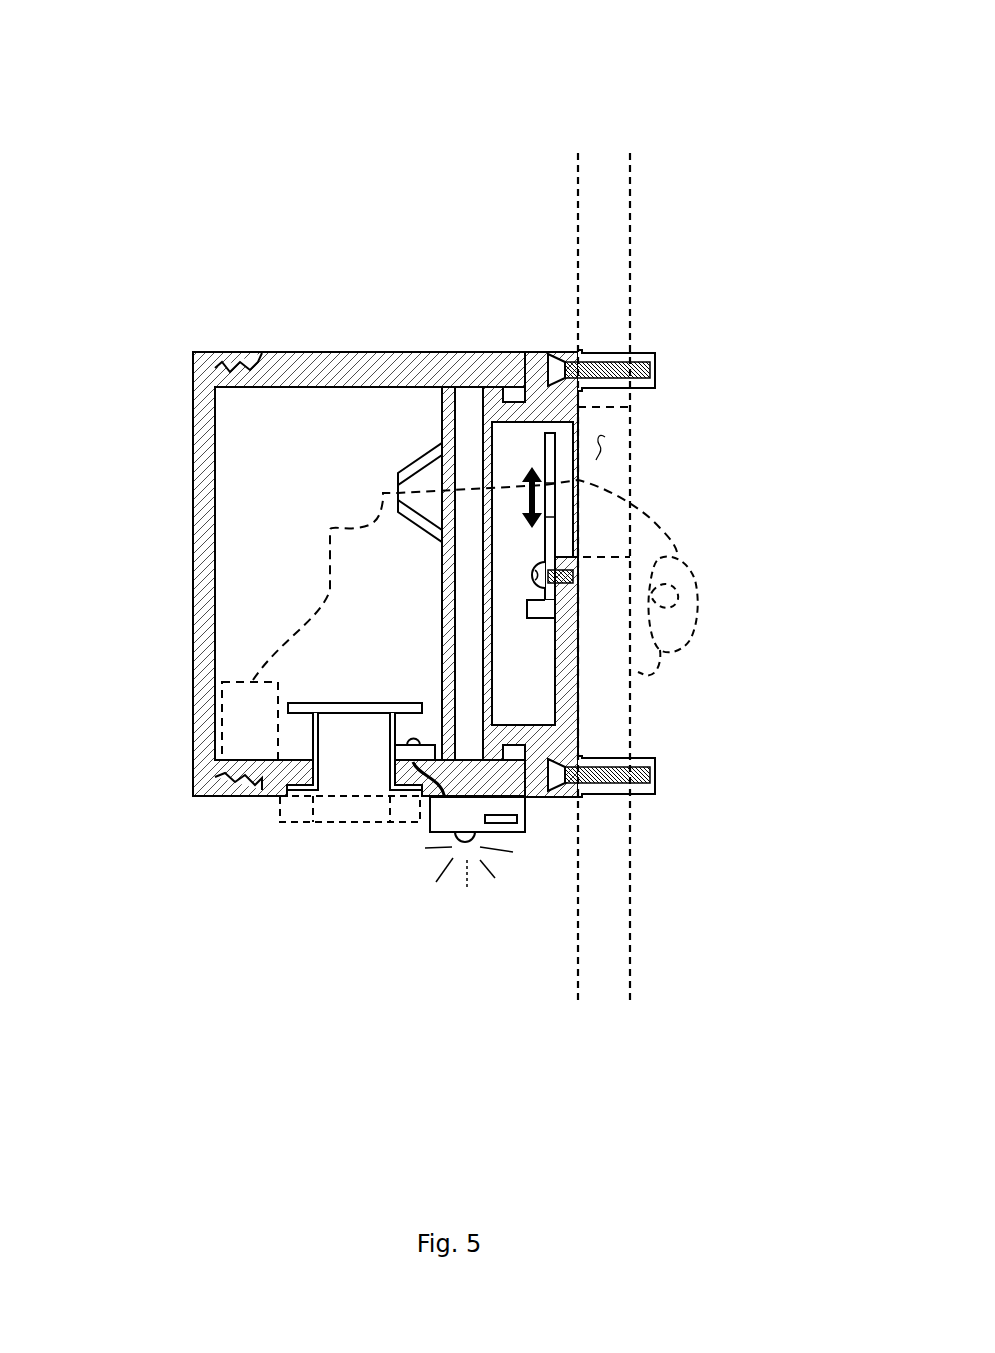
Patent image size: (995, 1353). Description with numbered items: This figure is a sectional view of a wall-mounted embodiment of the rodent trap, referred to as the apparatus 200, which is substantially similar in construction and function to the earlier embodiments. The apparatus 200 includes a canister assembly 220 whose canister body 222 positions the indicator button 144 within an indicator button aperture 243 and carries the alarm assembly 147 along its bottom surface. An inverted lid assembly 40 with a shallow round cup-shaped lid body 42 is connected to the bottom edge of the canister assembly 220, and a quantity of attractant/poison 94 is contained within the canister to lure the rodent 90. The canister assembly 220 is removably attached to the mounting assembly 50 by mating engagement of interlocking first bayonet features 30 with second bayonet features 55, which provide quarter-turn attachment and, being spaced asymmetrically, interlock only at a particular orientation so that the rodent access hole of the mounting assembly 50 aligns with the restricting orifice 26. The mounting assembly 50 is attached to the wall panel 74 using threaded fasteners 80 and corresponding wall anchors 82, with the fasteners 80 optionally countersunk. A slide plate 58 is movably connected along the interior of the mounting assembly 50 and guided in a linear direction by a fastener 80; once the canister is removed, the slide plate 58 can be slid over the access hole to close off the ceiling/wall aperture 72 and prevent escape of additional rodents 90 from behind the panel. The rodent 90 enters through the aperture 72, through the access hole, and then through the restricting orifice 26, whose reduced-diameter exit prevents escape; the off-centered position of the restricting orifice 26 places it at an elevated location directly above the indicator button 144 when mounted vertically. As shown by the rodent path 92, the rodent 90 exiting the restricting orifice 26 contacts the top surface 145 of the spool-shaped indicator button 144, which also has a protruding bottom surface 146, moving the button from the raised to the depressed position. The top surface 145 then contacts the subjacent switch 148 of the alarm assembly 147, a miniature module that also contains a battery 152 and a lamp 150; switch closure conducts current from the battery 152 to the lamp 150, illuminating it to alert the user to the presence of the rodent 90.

The apparatus 200 is at (140, 172).
The lid assembly 40 is at (193, 487).
The lid body 42 is at (193, 422).
The canister body 222 is at (347, 352).
The canister assembly 220 is at (272, 800).
The restricting orifice 26 is at (398, 470).
The mounting assembly 50 is at (558, 351).
The first bayonet features 30 is at (515, 387).
The second bayonet features 55 is at (490, 385).
The fastener 80 is at (655, 357).
The wall anchor 82 is at (657, 370).
The ceiling/wall aperture 72 is at (605, 437).
The slide plate 58 is at (553, 485).
The wall panel 74 is at (630, 230).
The rodent path 92 is at (328, 590).
The rodent 90 is at (697, 610).
The attractant/poison 94 is at (193, 710).
The top surface 145 is at (360, 703).
The indicator button 144 is at (353, 760).
The bottom surface 146 is at (391, 797).
The indicator button aperture 243 is at (313, 762).
The switch 148 is at (413, 737).
The lamp 150 is at (480, 843).
The battery 152 is at (517, 832).
The alarm assembly 147 is at (423, 852).